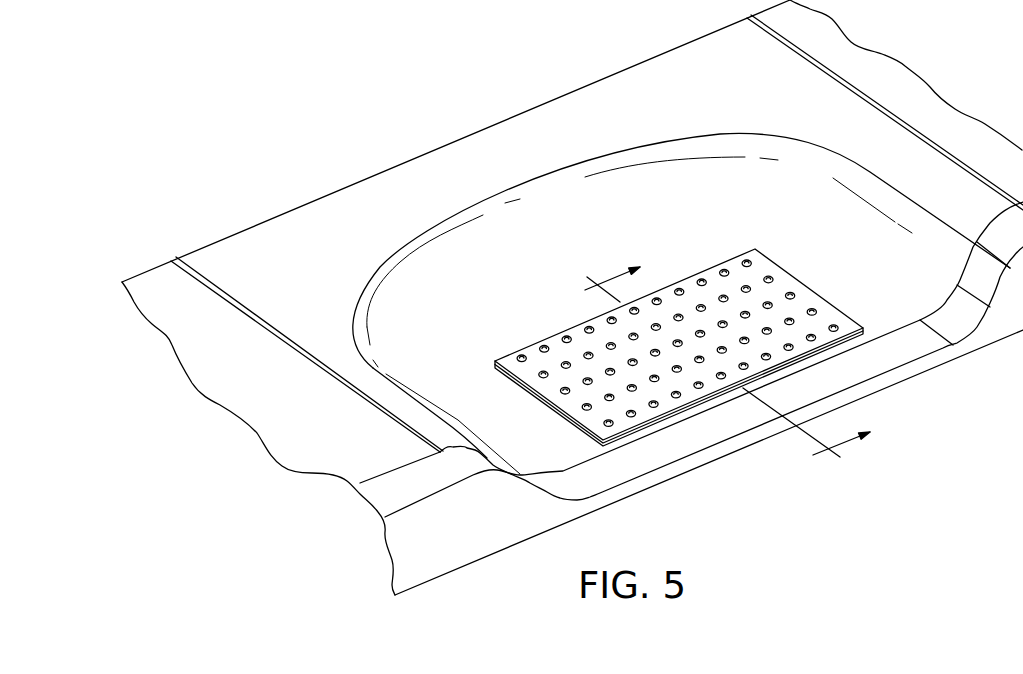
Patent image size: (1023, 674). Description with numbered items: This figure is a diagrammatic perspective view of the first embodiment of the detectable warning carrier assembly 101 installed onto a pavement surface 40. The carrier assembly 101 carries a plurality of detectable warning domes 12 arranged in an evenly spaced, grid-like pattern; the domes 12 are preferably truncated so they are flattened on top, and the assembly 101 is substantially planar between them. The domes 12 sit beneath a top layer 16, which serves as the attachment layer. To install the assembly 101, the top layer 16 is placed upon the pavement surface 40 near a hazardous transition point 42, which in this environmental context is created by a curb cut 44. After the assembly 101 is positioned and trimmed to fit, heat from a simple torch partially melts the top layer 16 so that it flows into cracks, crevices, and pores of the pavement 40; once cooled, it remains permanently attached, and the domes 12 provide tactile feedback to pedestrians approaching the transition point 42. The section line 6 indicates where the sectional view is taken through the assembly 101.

The detectable warning carrier assembly 101 is at (669, 319).
The detectable warning domes 12 is at (553, 338).
The top layer 16 is at (548, 407).
The pavement surface 40 is at (572, 297).
The hazardous transition point 42 is at (697, 468).
The curb cut 44 is at (897, 358).
The section line 6- 6 is at (718, 370).